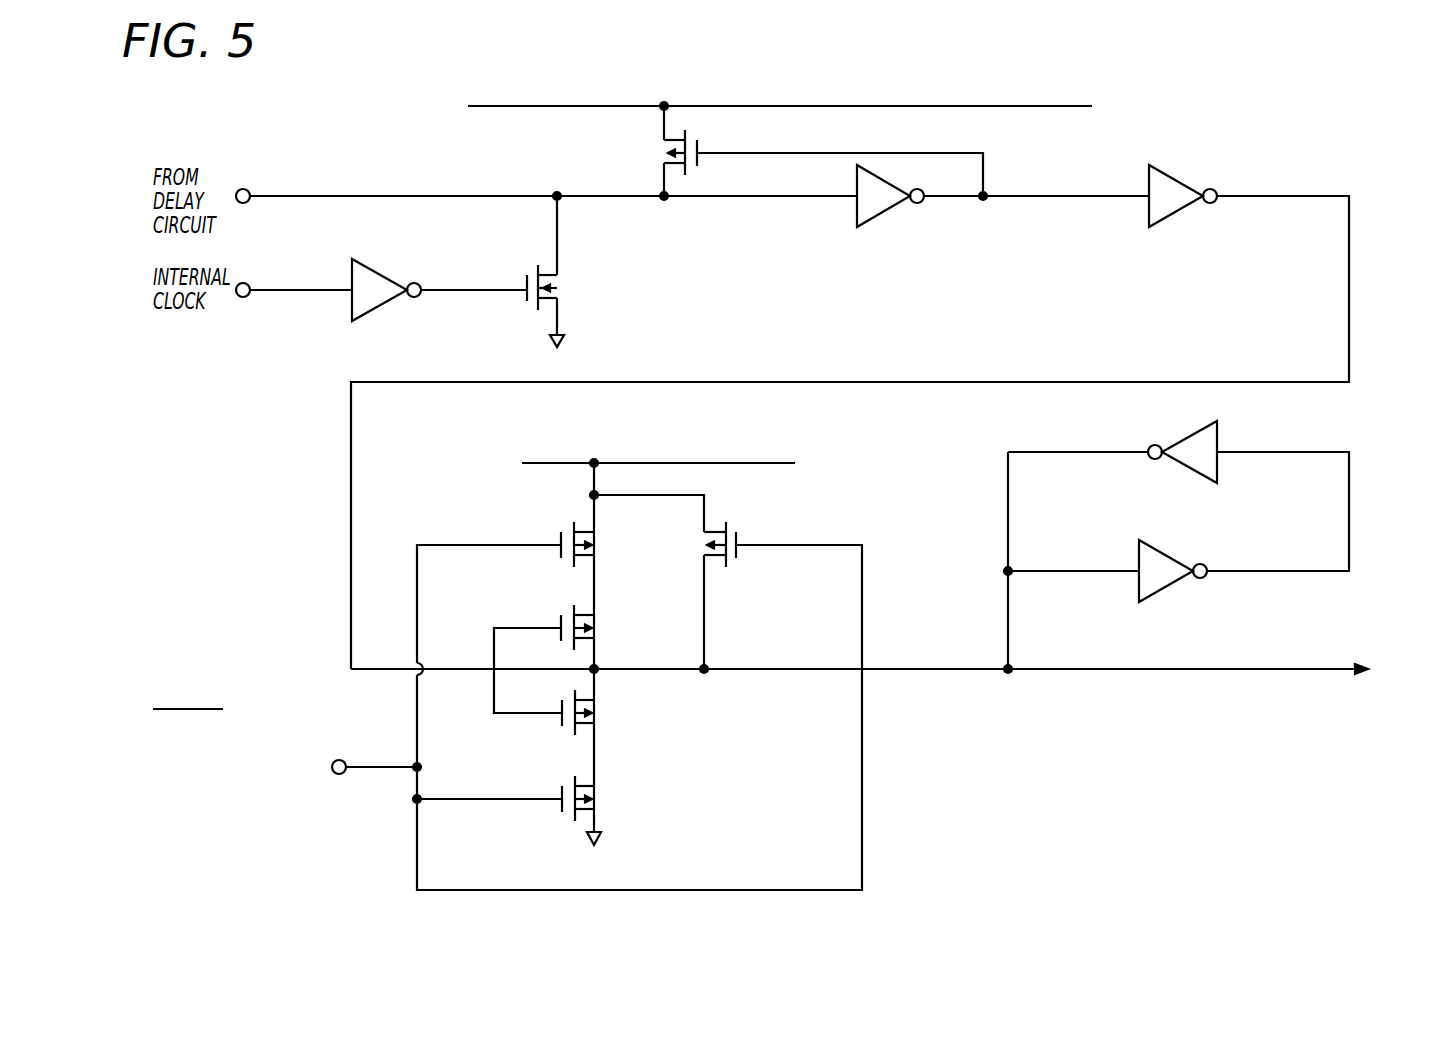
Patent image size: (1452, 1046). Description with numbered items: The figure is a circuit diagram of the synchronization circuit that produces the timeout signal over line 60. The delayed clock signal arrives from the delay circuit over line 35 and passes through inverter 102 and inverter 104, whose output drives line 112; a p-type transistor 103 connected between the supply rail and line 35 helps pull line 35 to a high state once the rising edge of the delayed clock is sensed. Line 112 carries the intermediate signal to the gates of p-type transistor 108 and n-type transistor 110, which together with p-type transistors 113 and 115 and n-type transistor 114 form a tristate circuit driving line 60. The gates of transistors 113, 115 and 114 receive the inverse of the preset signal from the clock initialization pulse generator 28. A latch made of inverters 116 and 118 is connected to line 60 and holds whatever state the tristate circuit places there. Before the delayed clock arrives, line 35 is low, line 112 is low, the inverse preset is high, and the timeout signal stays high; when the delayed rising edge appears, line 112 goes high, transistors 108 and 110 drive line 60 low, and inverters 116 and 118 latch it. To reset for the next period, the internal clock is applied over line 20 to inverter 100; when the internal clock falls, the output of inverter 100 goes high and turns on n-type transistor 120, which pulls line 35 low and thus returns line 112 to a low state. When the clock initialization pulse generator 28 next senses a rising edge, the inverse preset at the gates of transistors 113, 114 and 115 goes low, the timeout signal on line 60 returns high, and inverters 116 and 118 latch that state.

The line 20 is at (300, 292).
The inverter 100 is at (379, 306).
The n-type transistor 120 is at (536, 270).
The p-type transistor 103 is at (667, 120).
The line 35 is at (630, 198).
The inverter 102 is at (879, 210).
The inverter 104 is at (1176, 208).
The line 112 is at (1350, 285).
The p-type transistor 113 is at (572, 526).
The p-type transistor 115 is at (738, 527).
The p-type transistor 108 is at (572, 610).
The n-type transistor 110 is at (572, 694).
The n-type transistor 114 is at (572, 780).
The clock initialization pulse generator 28 is at (287, 770).
The line 60 is at (1248, 670).
The inverter 116 is at (1193, 470).
The inverter 118 is at (1163, 592).